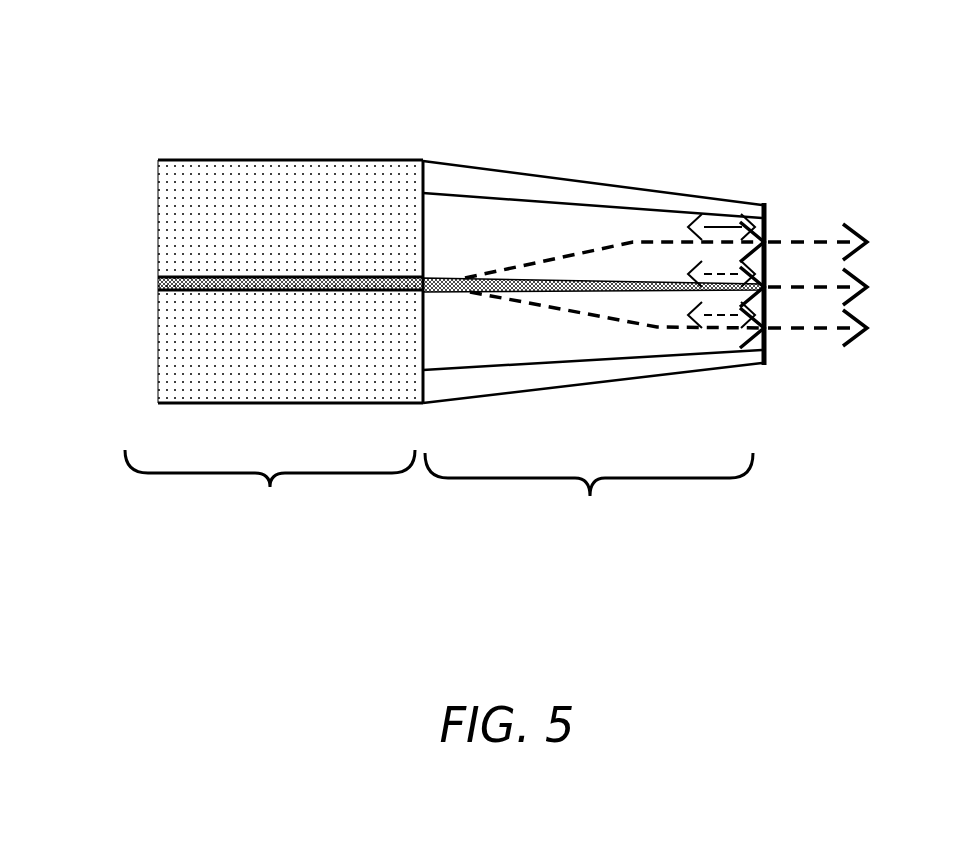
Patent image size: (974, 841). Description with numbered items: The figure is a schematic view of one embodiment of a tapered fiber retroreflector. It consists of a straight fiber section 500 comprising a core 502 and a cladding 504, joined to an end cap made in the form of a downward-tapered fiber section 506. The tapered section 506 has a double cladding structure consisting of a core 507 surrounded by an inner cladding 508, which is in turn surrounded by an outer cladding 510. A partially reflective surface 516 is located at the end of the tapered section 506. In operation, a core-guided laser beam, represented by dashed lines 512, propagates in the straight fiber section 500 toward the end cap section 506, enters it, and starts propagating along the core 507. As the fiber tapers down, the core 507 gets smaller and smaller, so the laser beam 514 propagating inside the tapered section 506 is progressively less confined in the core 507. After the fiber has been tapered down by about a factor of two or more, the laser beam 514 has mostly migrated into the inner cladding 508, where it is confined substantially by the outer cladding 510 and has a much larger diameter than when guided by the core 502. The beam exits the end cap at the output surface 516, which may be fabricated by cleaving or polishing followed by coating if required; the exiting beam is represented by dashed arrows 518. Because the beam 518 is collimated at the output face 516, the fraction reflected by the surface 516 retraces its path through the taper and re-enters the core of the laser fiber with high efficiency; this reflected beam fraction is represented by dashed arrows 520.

The straight fiber section 500 is at (270, 487).
The core 502 is at (190, 276).
The cladding 504 is at (279, 160).
The downward-tapered fiber section 506 is at (590, 497).
The core 507 is at (577, 288).
The inner cladding 508 is at (574, 203).
The outer cladding 510 is at (484, 165).
The dashed lines 512 is at (370, 291).
The laser beam 514 is at (657, 322).
The partially reflective surface 516 is at (765, 200).
The exiting beam 518 is at (805, 242).
The reflected beam fraction 520 is at (720, 278).